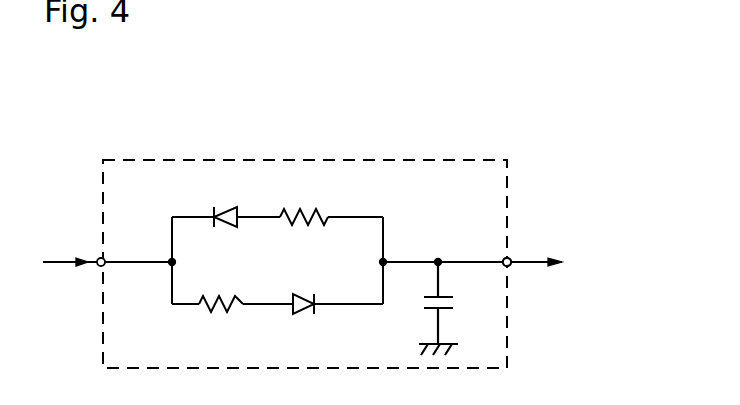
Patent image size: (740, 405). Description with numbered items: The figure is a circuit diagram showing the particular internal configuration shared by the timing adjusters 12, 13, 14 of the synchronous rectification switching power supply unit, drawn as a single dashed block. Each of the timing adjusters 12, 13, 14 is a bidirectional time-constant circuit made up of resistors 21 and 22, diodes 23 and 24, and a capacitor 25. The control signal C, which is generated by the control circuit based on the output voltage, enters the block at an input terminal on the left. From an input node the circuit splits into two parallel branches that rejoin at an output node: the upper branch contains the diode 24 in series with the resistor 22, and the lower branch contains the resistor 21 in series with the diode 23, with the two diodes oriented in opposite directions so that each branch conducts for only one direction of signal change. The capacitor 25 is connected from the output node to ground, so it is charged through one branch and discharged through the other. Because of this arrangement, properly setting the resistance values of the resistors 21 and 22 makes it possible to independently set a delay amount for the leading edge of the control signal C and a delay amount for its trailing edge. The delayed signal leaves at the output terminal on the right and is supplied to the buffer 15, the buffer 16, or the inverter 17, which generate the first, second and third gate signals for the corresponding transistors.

The timing adjuster 12 is at (303, 160).
The timing adjuster 13 is at (305, 264).
The timing adjuster 14 is at (305, 264).
The control signal C is at (62, 262).
The buffer 15 is at (584, 263).
The buffer 16 is at (532, 262).
The inverter 17 is at (532, 262).
The resistor 21 is at (217, 311).
The resistor 22 is at (288, 210).
The diode 23 is at (301, 312).
The diode 24 is at (216, 208).
The capacitor 25 is at (453, 302).